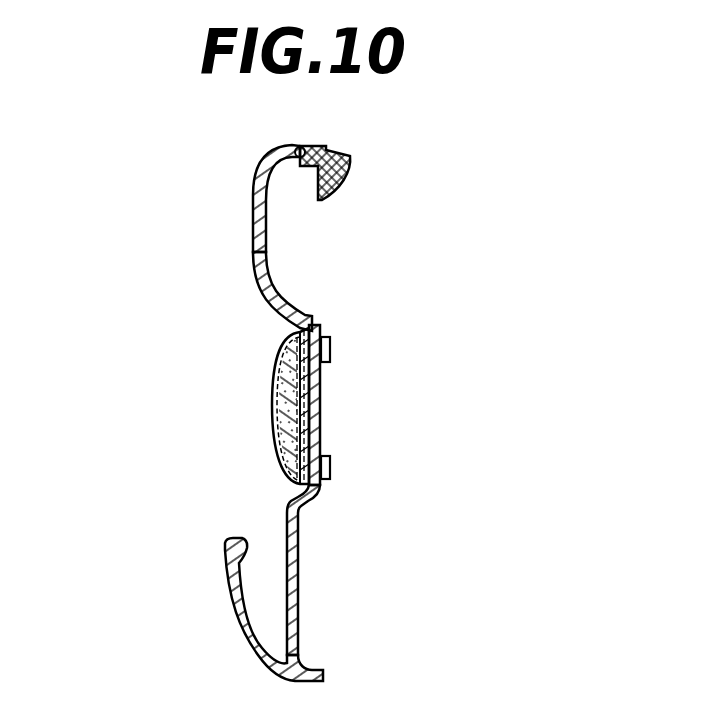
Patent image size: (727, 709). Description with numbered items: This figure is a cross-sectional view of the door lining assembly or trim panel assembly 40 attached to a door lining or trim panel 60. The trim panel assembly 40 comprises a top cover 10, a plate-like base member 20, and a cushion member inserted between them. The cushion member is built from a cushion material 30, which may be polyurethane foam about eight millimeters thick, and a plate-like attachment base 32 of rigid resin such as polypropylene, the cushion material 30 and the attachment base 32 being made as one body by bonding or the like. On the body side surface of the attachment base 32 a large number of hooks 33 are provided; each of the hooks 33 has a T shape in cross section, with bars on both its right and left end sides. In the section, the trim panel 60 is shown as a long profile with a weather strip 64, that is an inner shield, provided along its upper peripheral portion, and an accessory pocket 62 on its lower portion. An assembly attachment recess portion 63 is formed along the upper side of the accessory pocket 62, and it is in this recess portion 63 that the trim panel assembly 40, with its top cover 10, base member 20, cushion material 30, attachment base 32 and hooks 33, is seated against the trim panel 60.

The top cover 10 is at (273, 385).
The plate-like base member 20 is at (310, 396).
The cushion material 30 is at (276, 356).
The plate-like attachment base 32 is at (276, 429).
The hooks 33 is at (330, 348).
The trim panel assembly 40 is at (200, 378).
The trim panel 60 is at (254, 182).
The accessory pocket 62 is at (228, 540).
The assembly attachment recess portion 63 is at (315, 326).
The weather strip 64 is at (350, 167).